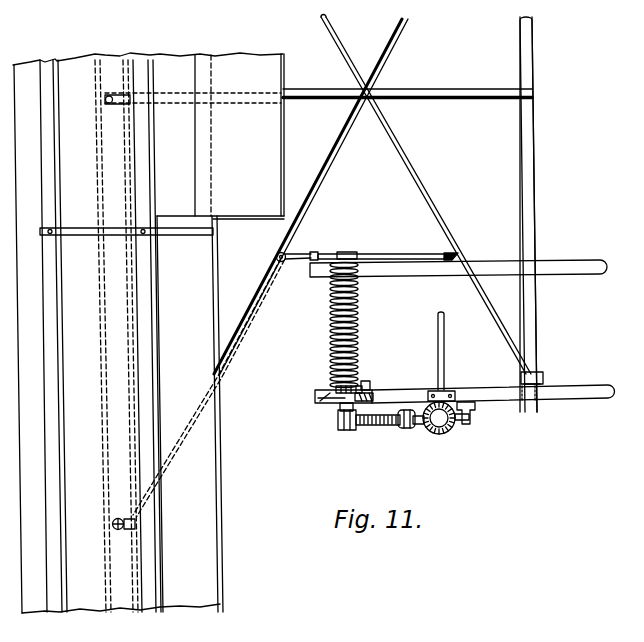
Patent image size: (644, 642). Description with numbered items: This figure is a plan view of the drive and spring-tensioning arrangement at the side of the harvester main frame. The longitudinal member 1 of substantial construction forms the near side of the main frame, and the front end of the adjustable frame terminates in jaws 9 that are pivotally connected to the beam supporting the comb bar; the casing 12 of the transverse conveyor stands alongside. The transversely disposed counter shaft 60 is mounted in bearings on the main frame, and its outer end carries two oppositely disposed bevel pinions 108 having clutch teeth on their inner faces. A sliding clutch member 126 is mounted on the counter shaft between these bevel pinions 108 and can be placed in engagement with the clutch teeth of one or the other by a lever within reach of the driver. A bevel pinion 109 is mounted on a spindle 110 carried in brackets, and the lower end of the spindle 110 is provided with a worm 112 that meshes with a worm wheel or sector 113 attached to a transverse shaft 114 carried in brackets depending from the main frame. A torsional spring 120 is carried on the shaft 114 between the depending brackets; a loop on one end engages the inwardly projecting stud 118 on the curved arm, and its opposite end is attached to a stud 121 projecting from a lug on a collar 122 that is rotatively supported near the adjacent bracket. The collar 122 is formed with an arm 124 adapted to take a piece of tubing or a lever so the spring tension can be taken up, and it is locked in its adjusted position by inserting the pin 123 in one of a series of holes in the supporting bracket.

The longitudinal member 1 is at (313, 200).
The jaws 9 is at (119, 517).
The casing of the transverse conveyor 12 is at (148, 333).
The counter shaft 60 is at (445, 349).
The bevel pinions 108 is at (468, 421).
The bevel pinion 109 is at (421, 425).
The spindle 110 is at (408, 429).
The worm 112 is at (381, 428).
The worm wheel or sector 113 is at (346, 432).
The transverse shaft 114 is at (338, 407).
The stud 118 is at (353, 252).
The torsional spring 120 is at (359, 331).
The stud 121 is at (369, 384).
The collar 122 is at (373, 398).
The pin 123 is at (366, 386).
The arm 124 is at (330, 403).
The sliding clutch member 126 is at (428, 431).